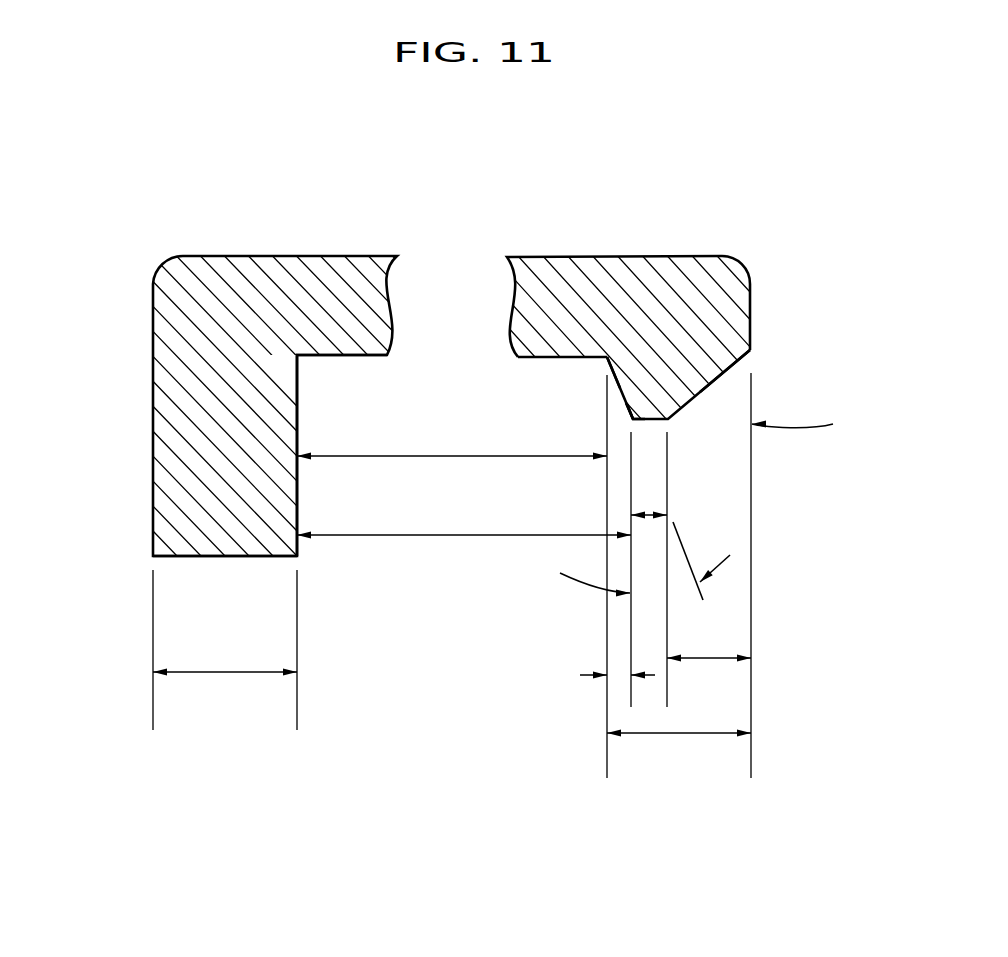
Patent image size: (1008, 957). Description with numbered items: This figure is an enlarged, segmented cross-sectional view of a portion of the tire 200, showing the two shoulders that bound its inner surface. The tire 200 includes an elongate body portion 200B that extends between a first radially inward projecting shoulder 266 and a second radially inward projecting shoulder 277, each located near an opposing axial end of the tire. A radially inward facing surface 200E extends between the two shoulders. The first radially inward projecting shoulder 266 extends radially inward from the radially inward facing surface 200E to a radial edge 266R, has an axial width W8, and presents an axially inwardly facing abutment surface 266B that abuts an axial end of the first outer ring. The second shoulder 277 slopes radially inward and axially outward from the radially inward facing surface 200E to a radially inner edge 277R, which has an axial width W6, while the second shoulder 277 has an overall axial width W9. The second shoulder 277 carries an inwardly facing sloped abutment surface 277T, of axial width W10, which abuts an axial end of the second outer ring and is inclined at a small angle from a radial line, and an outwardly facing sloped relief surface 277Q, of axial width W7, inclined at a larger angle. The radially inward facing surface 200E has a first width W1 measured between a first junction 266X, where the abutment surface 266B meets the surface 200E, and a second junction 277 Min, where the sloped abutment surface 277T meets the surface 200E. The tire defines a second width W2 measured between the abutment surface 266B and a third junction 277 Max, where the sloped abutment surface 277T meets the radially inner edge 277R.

The tire 200 is at (205, 272).
The first radially inward projecting shoulder 266 is at (190, 477).
The first junction 266X is at (303, 364).
The axially inwardly facing abutment surface 266B is at (353, 478).
The radial edge 266R is at (227, 557).
The radially inward facing surface 200E is at (357, 356).
The elongate body portion 200B is at (543, 297).
The second radially inward projecting shoulder 277 is at (716, 336).
The second junction 277 Min is at (700, 387).
The third junction 277 Max is at (746, 468).
The outwardly facing sloped relief surface 277Q is at (783, 379).
The radially inner edge 277R is at (733, 447).
The inwardly facing sloped abutment surface 277T is at (726, 508).
The first width W1 is at (415, 457).
The second width W2 is at (463, 535).
The axial width W6 is at (650, 517).
The axial width W7 is at (705, 659).
The axial width W8 is at (227, 673).
The overall axial width W9 is at (700, 734).
The axial width W10 is at (618, 676).